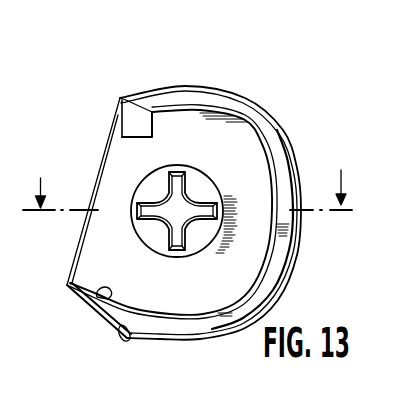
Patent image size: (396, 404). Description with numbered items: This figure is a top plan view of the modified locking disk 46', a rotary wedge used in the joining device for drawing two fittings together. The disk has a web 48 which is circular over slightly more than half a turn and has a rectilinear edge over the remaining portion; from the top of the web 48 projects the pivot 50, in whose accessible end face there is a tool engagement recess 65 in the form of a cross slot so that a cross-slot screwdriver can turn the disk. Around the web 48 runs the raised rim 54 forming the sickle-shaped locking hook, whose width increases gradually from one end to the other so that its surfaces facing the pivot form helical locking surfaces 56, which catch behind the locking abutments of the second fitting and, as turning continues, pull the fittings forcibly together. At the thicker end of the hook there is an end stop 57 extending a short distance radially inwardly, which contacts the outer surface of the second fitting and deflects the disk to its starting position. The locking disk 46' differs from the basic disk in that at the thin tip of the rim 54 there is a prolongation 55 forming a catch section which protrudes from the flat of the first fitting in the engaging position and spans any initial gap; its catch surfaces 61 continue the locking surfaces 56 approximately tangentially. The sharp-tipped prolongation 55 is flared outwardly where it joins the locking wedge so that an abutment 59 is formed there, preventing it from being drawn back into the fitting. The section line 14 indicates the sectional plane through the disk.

The section line 14- 14 is at (187, 206).
The locking disk 46' is at (210, 185).
The web 48 is at (214, 292).
The pivot 50 is at (204, 183).
The raised rim 54 is at (287, 224).
The prolongation 55 is at (106, 322).
The locking surfaces 56 is at (265, 239).
The end stop 57 is at (138, 122).
The abutment 59 is at (130, 339).
The catch surfaces 61 is at (90, 305).
The tool engagement recess 65 is at (178, 218).